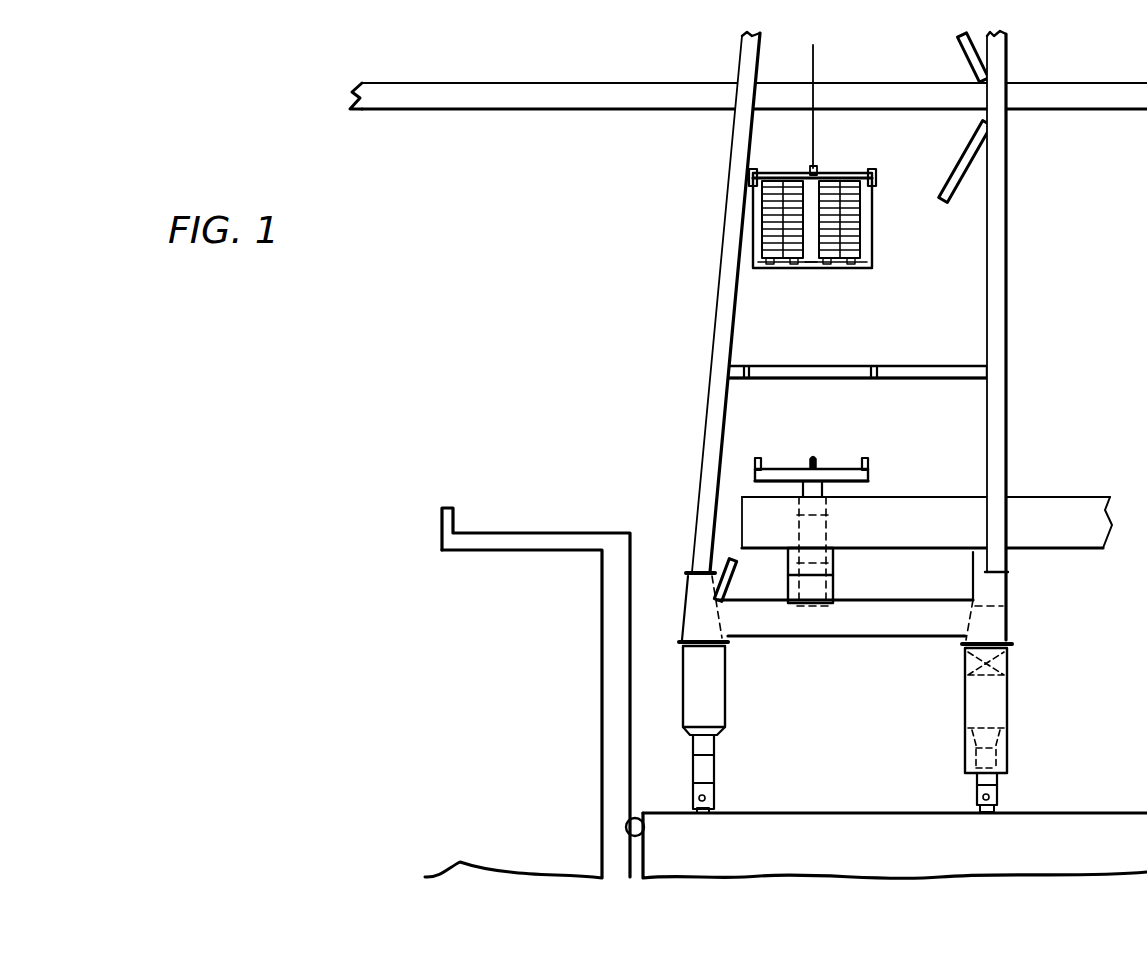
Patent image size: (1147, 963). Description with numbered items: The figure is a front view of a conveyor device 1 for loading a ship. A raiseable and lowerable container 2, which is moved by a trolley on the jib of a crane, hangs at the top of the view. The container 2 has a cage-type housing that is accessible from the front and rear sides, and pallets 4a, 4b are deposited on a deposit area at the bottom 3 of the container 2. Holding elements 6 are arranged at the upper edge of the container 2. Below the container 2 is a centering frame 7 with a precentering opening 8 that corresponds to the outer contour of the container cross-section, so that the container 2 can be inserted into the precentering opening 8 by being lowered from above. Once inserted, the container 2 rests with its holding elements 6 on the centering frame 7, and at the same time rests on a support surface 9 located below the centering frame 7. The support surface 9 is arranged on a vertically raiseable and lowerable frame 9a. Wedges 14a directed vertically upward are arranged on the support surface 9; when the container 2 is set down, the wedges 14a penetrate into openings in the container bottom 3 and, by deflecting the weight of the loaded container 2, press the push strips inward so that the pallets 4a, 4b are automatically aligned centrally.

The conveyor device 1 is at (1012, 410).
The container 2 is at (815, 189).
The bottom 3 is at (793, 270).
The pallet 4a is at (786, 269).
The pallet 4b is at (849, 268).
The holding elements 6 is at (752, 176).
The centering frame 7 is at (951, 366).
The precentering opening 8 is at (833, 366).
The support surface 9 is at (836, 468).
The frame 9a is at (858, 480).
The wedges 14a is at (756, 470).